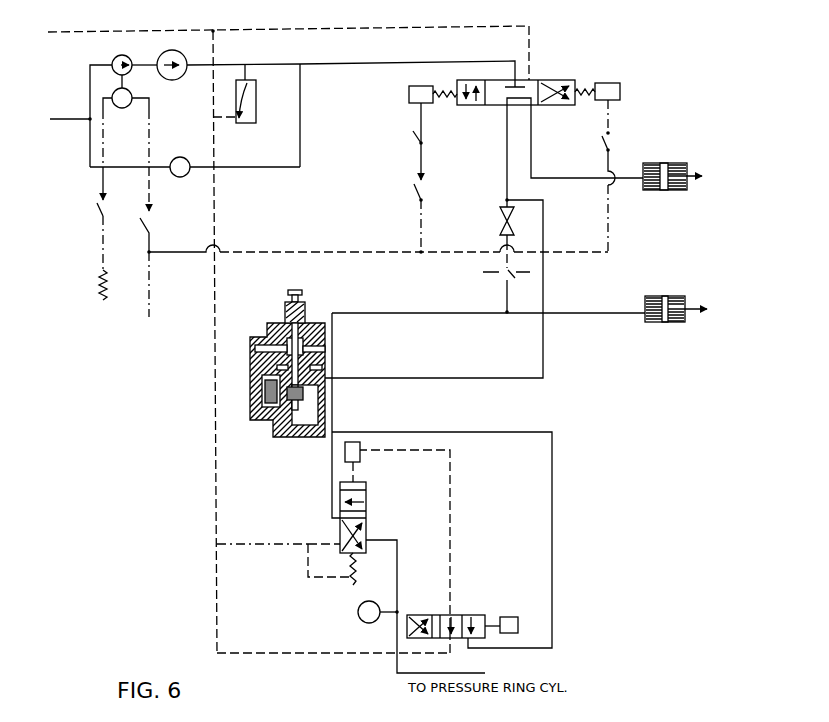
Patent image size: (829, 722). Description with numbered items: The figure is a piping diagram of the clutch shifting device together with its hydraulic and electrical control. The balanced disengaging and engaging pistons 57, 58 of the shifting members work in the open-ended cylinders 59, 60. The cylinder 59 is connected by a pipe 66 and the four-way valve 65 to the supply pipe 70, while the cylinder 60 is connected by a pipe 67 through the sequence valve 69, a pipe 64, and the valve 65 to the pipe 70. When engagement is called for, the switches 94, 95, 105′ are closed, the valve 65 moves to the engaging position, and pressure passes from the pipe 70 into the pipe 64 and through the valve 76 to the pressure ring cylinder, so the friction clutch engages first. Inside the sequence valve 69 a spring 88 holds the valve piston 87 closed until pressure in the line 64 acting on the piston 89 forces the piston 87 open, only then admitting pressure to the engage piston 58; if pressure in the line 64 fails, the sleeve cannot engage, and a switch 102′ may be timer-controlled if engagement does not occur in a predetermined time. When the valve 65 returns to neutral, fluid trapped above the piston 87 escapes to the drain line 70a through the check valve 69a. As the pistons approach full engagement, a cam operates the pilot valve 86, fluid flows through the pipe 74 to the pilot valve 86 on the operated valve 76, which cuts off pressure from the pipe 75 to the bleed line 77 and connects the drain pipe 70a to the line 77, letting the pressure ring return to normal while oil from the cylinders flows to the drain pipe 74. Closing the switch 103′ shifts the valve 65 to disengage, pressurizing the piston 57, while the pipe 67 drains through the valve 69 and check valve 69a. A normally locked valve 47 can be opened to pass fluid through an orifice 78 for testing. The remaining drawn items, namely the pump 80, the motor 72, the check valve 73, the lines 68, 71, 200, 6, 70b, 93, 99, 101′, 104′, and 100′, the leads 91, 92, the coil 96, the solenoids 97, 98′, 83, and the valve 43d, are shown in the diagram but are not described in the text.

The pipe 74 is at (380, 28).
The pump 80 is at (115, 58).
The conduit 68 is at (143, 62).
The check valve 73 is at (180, 80).
The motor 72 is at (127, 106).
The conduit 71 is at (90, 88).
The supply line 200 is at (56, 120).
The lead 91 is at (104, 141).
The lead 92 is at (149, 147).
The line 6 is at (124, 168).
The switch 94 is at (97, 204).
The coil 96 is at (102, 283).
The switch 95 is at (152, 224).
The lead 93 is at (148, 255).
The lead 101′ is at (362, 251).
The sequence valve 69 is at (268, 60).
The spring 88 is at (306, 320).
The valve piston 87 is at (325, 350).
The piston 89 is at (322, 388).
The passage 104′ is at (255, 349).
The check valve 69a is at (263, 392).
The branch line 70b is at (249, 73).
The valve 43d is at (257, 116).
The drain line 70a is at (216, 128).
The pipe 70 is at (462, 61).
The four-way valve 65 is at (562, 80).
The solenoid 98′ is at (621, 92).
The solenoid 97 is at (413, 103).
The switch 105′ is at (413, 143).
The lead 99 is at (423, 145).
The switch 102′ is at (426, 186).
The pipe 64 is at (506, 143).
The valve 47 is at (500, 218).
The orifice 78 is at (513, 276).
The pipe 67 is at (585, 313).
The pipe 66 is at (595, 180).
The piston 57 is at (664, 163).
The cylinder 59 is at (684, 164).
The lead 100′ is at (612, 129).
The switch 103′ is at (612, 149).
The piston 58 is at (664, 296).
The cylinder 60 is at (684, 297).
The pipe 75 is at (332, 482).
The pilot valve 86 is at (361, 458).
The valve 76 is at (367, 517).
The bleed line 77 is at (398, 572).
The solenoid 83 is at (516, 618).